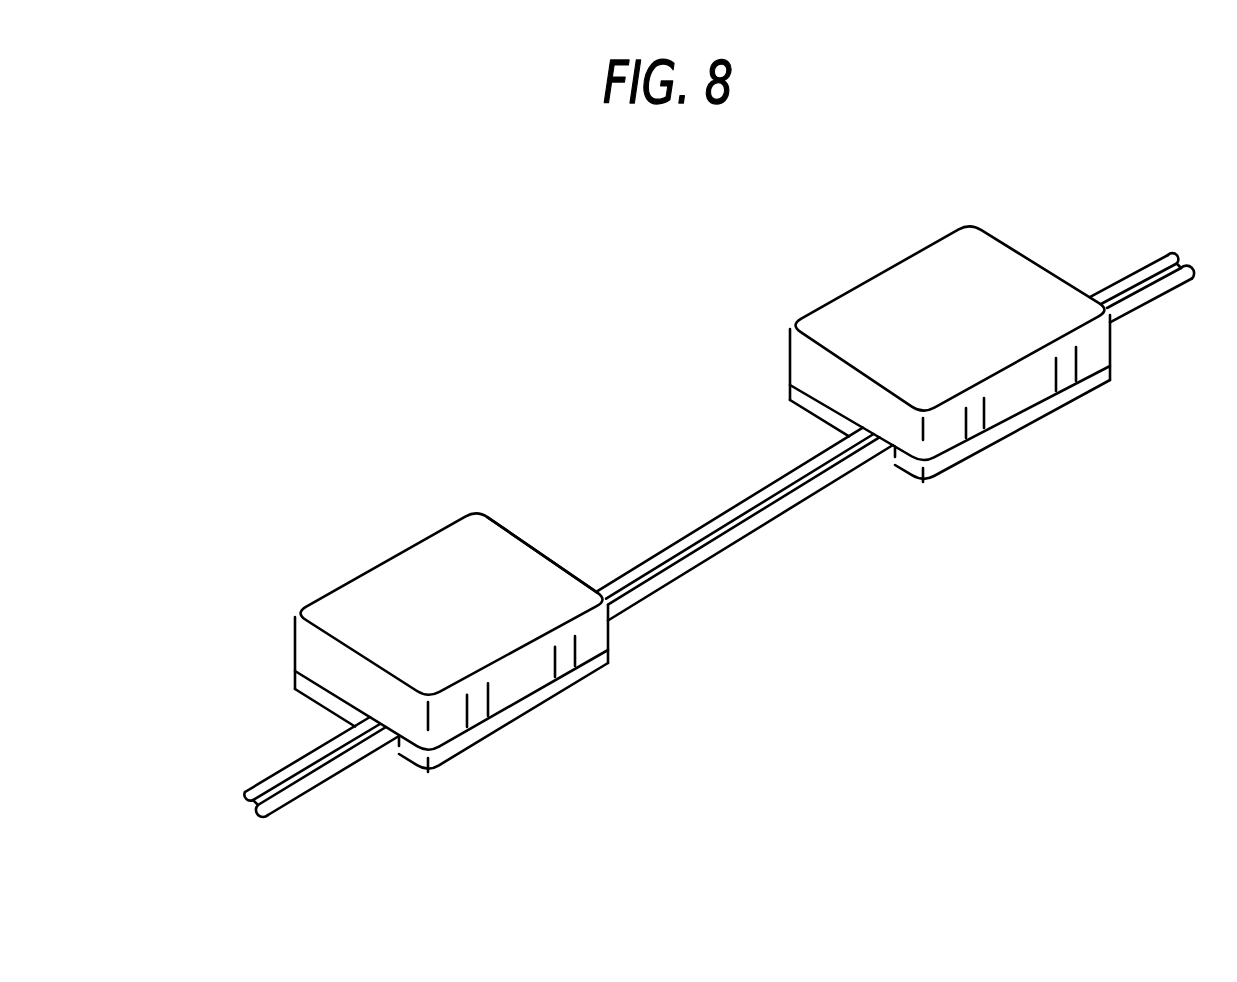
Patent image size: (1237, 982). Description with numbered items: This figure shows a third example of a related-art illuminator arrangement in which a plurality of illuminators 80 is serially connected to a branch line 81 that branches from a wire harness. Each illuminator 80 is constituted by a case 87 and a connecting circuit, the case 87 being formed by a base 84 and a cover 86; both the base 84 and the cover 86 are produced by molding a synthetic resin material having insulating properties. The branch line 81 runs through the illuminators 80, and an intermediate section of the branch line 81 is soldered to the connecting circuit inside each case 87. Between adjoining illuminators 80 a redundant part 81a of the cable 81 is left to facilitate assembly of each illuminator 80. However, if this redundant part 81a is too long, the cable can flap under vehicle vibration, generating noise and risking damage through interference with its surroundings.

The illuminator 80 is at (431, 529).
The branch line 81 is at (320, 781).
The redundant part 81a is at (733, 533).
The base 84 is at (533, 707).
The cover 86 is at (367, 587).
The case 87 is at (543, 545).